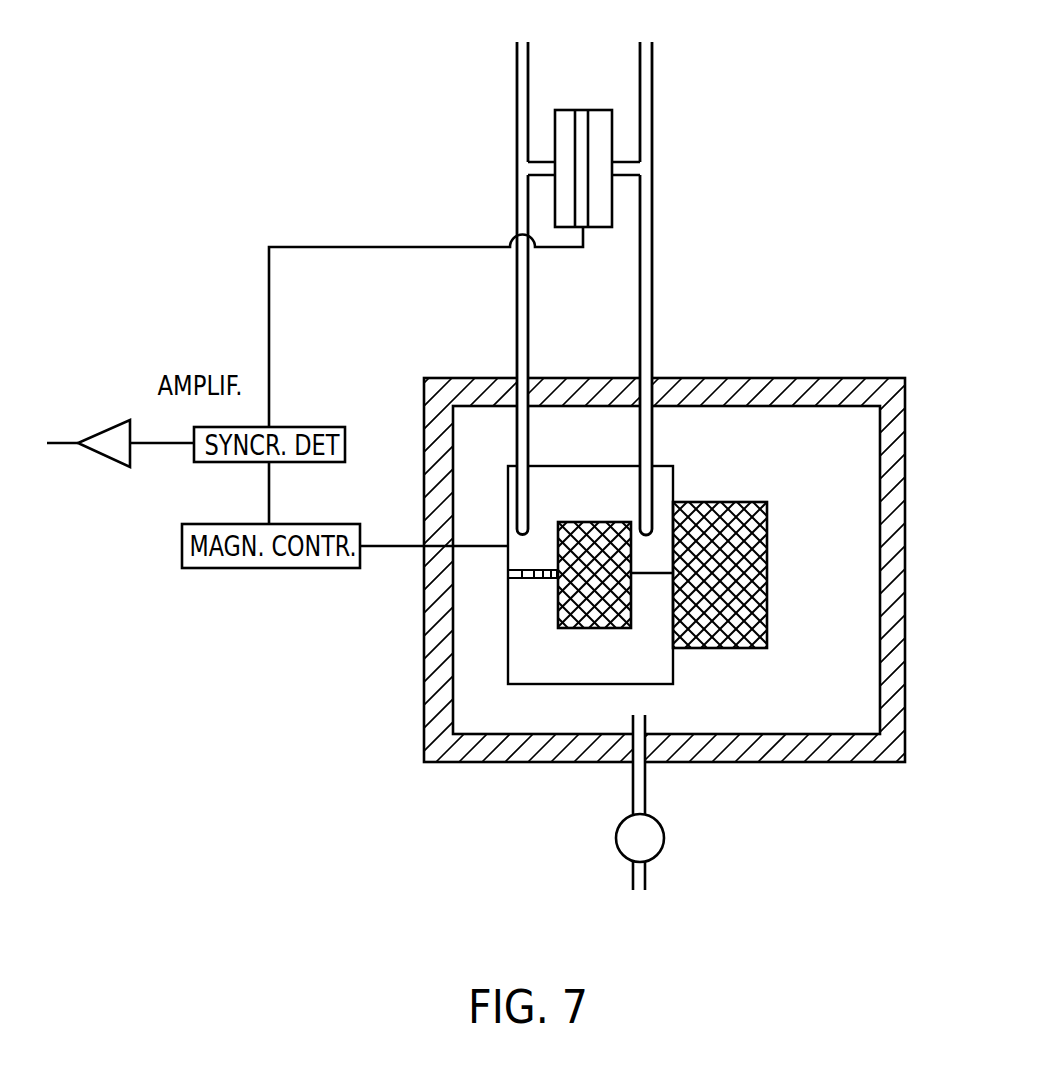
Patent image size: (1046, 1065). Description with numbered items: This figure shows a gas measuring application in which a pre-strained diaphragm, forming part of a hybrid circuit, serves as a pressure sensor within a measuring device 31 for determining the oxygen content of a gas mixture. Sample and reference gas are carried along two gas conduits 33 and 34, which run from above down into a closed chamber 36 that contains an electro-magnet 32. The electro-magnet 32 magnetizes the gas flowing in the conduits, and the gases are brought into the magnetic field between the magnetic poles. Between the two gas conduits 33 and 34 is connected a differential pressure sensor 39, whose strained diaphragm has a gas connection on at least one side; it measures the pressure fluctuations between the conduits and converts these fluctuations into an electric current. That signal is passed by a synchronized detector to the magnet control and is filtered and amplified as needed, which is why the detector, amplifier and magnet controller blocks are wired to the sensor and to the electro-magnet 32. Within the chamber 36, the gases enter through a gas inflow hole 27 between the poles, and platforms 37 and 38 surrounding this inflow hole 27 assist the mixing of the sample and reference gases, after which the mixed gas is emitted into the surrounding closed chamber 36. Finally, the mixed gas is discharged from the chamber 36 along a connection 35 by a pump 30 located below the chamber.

The gas inflow hole 27 is at (541, 580).
The pump 30 is at (657, 853).
The measuring device 31 is at (783, 242).
The electro-magnet 32 is at (660, 483).
The gas conduit 33 is at (646, 125).
The gas conduit 34 is at (520, 112).
The connection 35 is at (638, 787).
The closed chamber 36 is at (887, 387).
The platform 37 is at (550, 580).
The platform 38 is at (520, 580).
The differential pressure sensor 39 is at (602, 118).